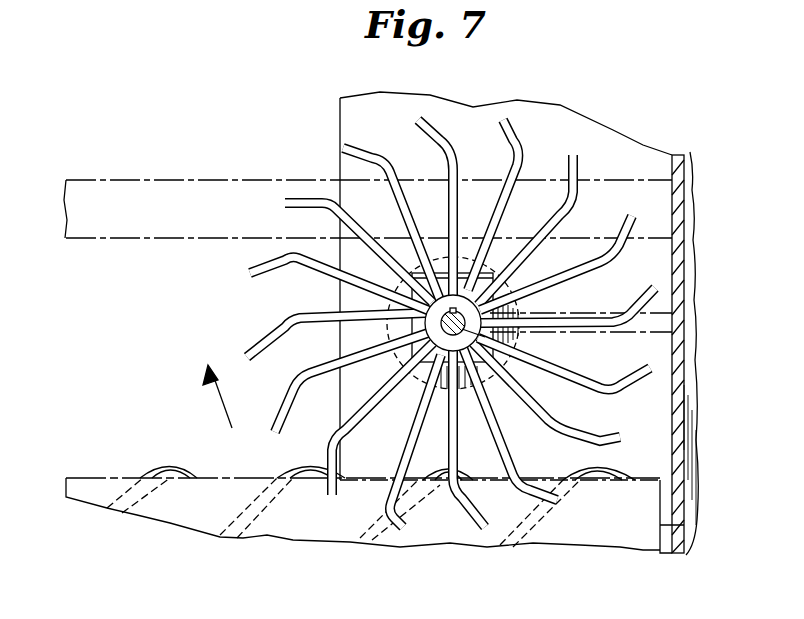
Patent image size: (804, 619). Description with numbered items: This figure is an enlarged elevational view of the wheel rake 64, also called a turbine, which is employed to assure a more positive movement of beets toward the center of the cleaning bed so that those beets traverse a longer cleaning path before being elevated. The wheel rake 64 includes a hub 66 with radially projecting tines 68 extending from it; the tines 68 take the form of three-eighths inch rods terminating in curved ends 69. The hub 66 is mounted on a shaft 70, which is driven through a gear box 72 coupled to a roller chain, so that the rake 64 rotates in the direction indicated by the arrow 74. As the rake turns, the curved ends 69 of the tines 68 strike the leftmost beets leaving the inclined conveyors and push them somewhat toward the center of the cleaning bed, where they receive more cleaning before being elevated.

The wheel rake 64 is at (549, 140).
The hub 66 is at (560, 248).
The tines 68 is at (392, 193).
The curved ends 69 is at (258, 282).
The shaft 70 is at (490, 368).
The gear box 72 is at (400, 407).
The arrow 74 is at (212, 399).